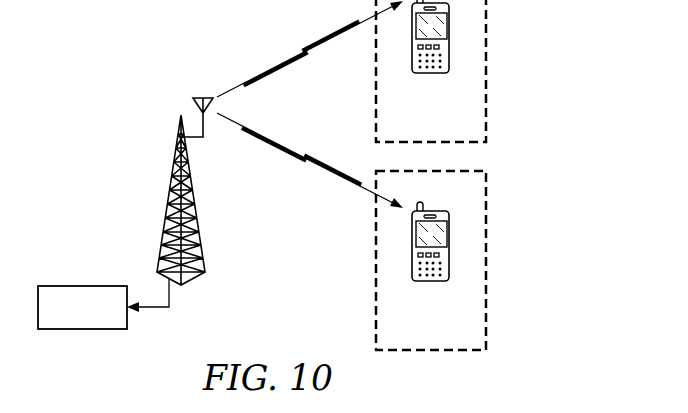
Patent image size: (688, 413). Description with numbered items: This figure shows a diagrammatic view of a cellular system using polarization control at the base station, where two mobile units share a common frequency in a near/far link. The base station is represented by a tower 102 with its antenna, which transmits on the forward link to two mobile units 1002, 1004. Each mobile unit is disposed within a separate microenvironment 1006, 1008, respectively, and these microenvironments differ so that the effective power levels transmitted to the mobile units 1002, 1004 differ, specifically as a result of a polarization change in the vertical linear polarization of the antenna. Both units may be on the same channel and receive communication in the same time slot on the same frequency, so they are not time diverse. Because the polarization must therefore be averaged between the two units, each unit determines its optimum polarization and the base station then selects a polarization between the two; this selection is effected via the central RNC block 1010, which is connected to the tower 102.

The tower 102 is at (165, 205).
The mobile unit 1002 is at (431, 74).
The mobile unit 1004 is at (431, 282).
The microenvironment 1006 is at (491, 33).
The microenvironment 1008 is at (491, 283).
The RNC block 1010 is at (82, 330).